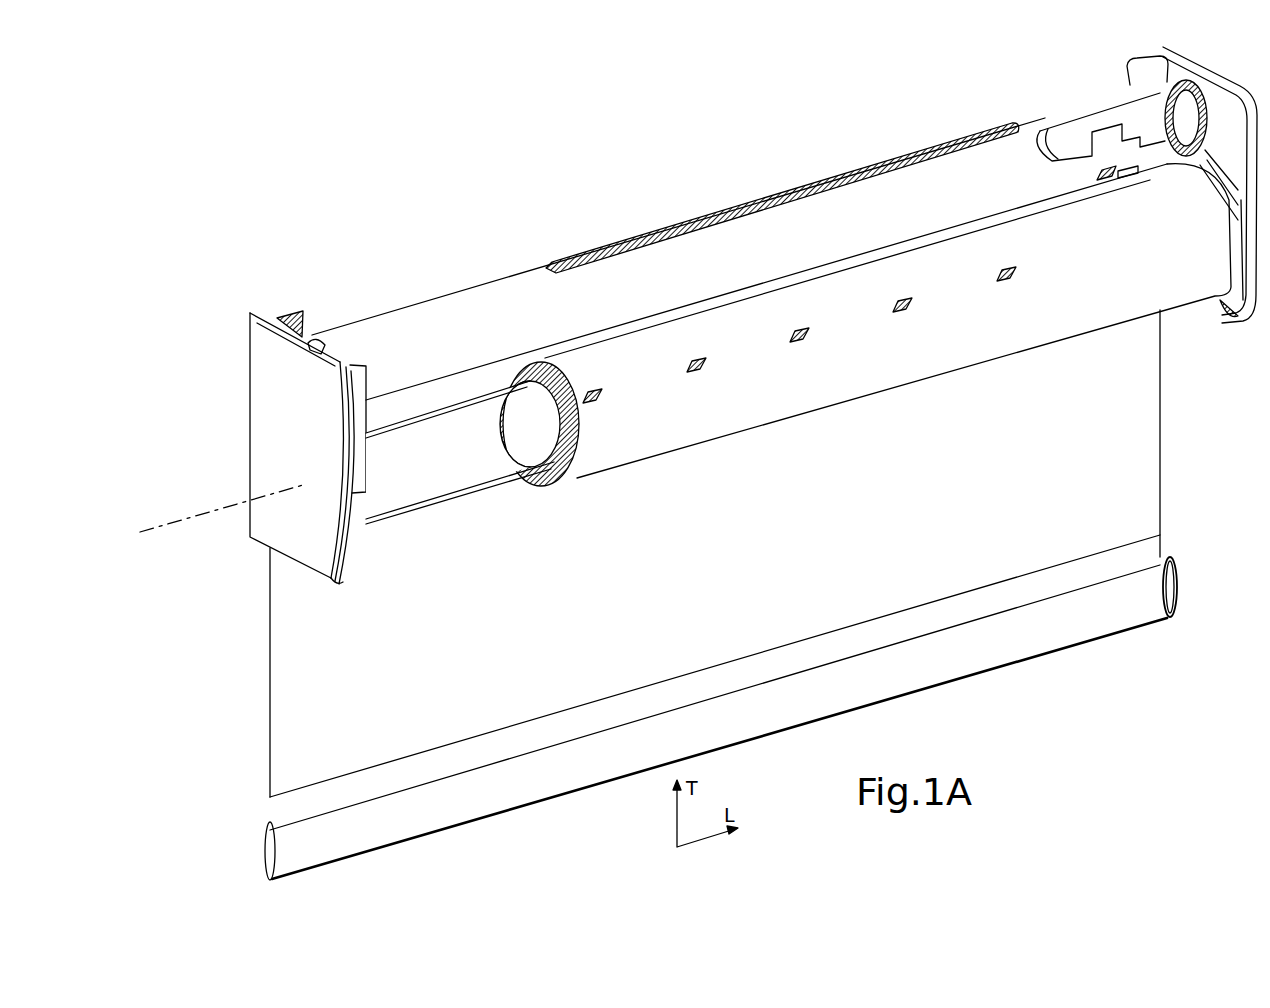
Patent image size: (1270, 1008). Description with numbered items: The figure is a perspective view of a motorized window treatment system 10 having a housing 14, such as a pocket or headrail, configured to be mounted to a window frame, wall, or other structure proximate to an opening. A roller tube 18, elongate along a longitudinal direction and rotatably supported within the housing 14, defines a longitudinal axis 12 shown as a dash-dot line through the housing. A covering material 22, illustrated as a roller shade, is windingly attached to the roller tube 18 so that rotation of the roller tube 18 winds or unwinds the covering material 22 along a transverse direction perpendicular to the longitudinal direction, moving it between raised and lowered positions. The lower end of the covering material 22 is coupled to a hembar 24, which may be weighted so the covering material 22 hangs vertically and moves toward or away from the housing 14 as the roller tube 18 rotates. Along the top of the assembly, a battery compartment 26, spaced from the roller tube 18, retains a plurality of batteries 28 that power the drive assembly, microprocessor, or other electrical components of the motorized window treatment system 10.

The motorized window treatment system 10 is at (400, 246).
The longitudinal axis 12 is at (167, 524).
The housing 14 is at (270, 377).
The roller tube 18 is at (468, 463).
The covering material 22 is at (1113, 443).
The hembar 24 is at (1177, 590).
The battery compartment 26 is at (840, 222).
The batteries 28 is at (1080, 127).